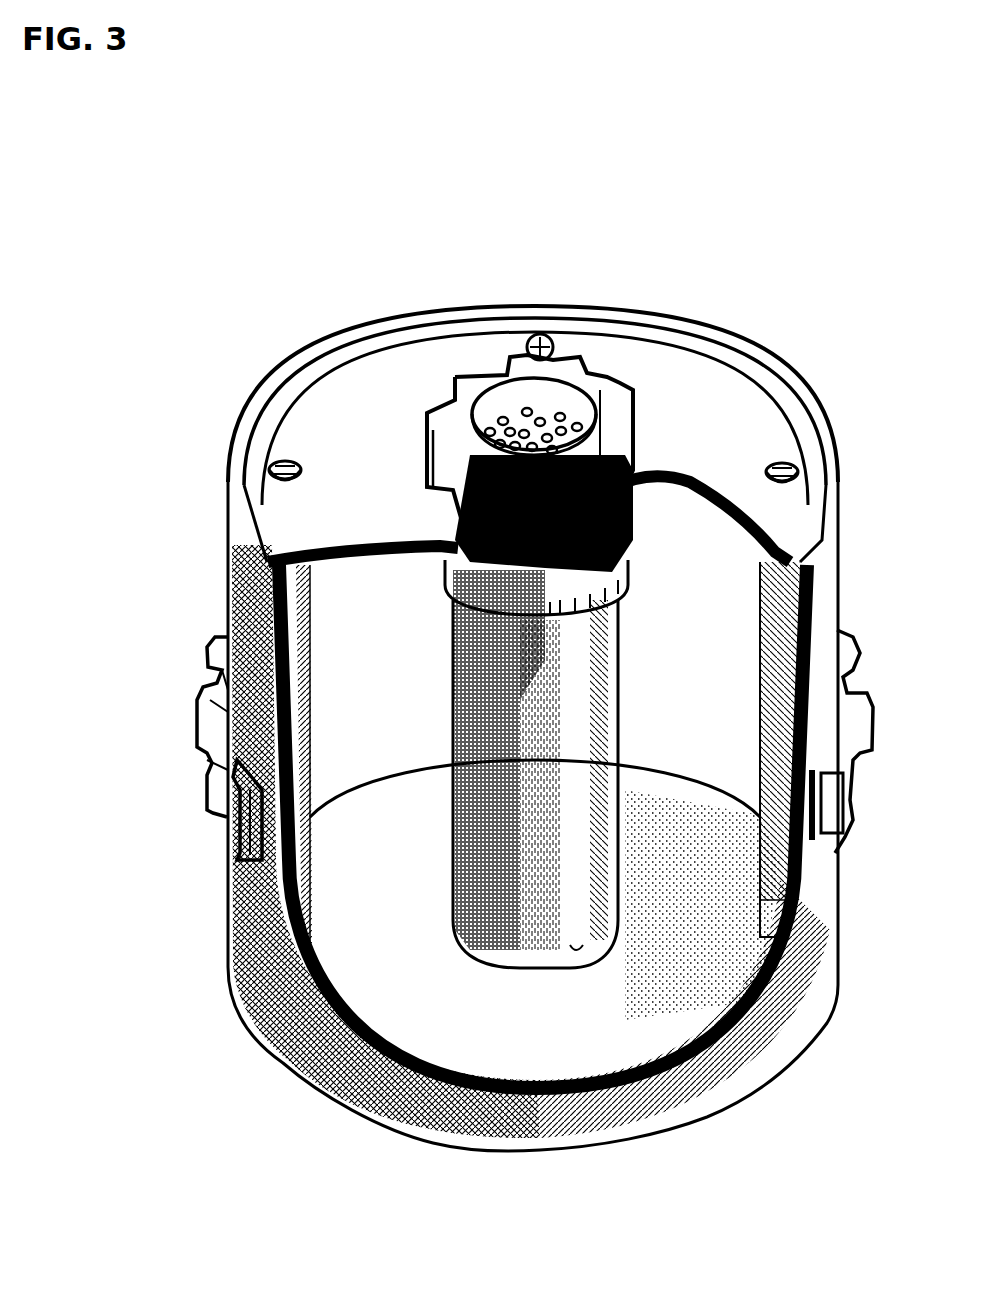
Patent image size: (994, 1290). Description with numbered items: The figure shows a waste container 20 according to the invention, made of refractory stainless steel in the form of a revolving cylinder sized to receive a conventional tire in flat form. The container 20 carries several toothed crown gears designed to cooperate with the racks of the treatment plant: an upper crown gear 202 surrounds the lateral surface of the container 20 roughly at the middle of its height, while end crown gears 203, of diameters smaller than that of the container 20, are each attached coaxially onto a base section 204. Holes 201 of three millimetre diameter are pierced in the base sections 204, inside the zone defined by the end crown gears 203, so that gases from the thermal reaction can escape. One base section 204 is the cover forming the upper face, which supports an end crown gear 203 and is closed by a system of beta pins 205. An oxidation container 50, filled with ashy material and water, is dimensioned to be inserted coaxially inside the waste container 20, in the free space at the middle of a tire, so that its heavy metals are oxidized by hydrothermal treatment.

The container 20 is at (374, 236).
The oxidation container 50 is at (236, 835).
The holes 201 is at (515, 400).
The upper crown gear 202 is at (200, 683).
The end crown gear 203 is at (566, 352).
The base section 204 is at (682, 398).
The beta pins 205 is at (530, 341).